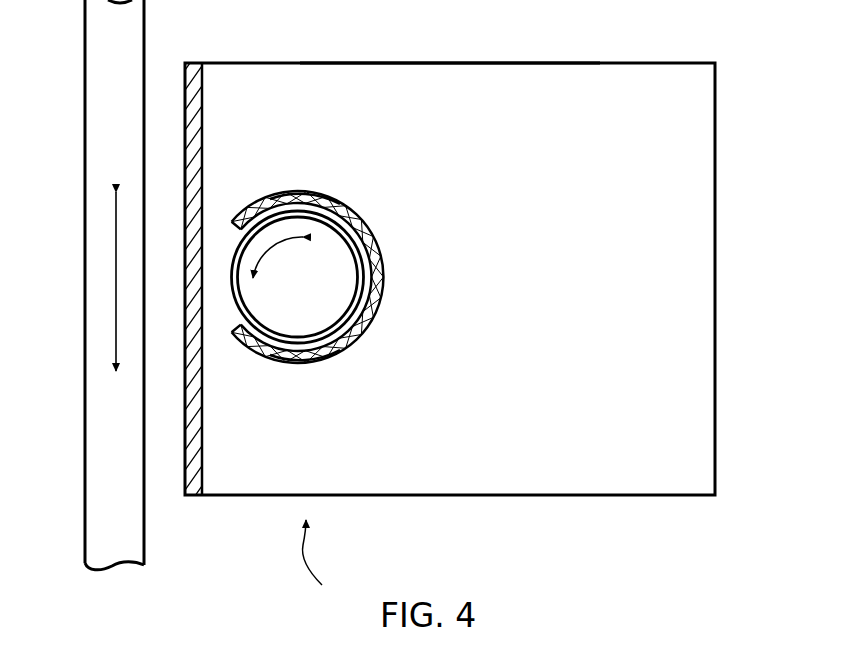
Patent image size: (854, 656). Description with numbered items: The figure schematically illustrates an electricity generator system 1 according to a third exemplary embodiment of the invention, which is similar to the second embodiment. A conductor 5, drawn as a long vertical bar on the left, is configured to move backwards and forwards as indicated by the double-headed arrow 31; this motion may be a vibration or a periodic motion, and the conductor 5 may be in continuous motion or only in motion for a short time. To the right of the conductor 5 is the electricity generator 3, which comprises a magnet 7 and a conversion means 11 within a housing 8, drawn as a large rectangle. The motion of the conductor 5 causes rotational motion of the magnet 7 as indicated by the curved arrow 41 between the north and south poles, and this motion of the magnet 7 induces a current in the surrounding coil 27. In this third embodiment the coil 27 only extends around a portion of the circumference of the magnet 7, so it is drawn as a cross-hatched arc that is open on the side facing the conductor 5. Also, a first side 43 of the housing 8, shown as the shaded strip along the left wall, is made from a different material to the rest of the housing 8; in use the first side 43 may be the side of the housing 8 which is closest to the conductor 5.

The electricity generator system 1 is at (317, 569).
The electricity generator 3 is at (716, 210).
The conductor 5 is at (85, 135).
The magnet 7 is at (363, 266).
The housing 8 is at (421, 63).
The conversion means 11 is at (328, 200).
The coil 27 is at (332, 357).
The arrow 31 is at (114, 297).
The arrow 41 is at (274, 236).
The first side 43 is at (196, 63).